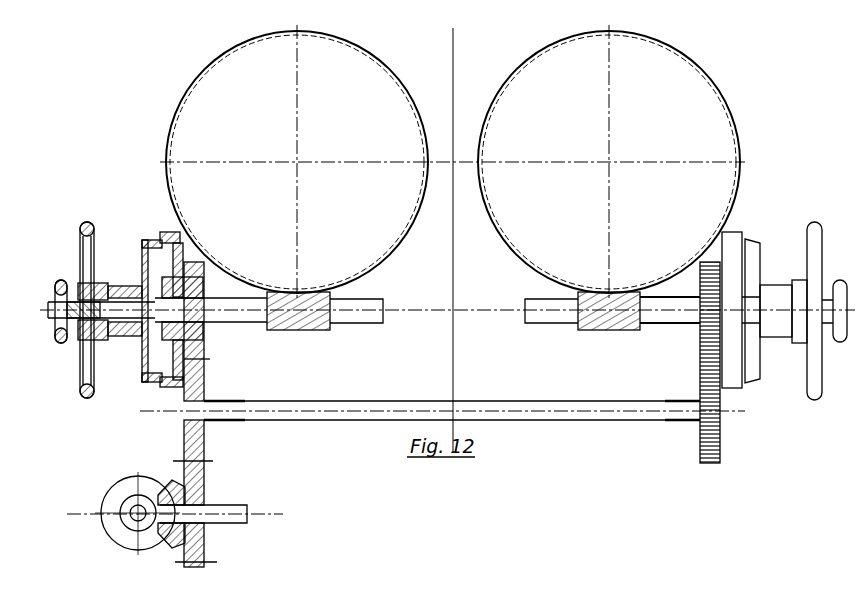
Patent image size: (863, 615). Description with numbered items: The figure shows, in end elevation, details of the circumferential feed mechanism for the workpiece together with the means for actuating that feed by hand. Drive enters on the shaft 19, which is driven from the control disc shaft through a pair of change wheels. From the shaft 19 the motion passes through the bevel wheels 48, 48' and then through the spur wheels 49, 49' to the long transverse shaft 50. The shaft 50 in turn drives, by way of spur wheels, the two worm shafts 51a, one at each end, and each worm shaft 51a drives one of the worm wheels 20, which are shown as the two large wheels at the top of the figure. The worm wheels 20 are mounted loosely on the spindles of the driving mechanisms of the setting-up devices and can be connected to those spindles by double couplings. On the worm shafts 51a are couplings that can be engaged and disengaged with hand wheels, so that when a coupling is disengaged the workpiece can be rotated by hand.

The shaft 19 is at (100, 509).
The worm wheels 20 is at (548, 264).
The bevel wheel 48 is at (131, 523).
The bevel wheel 48' is at (165, 527).
The spur wheel 49 is at (207, 545).
The spur wheel 49' is at (210, 462).
The shaft 50 is at (441, 401).
The worm shaft 51a is at (532, 312).